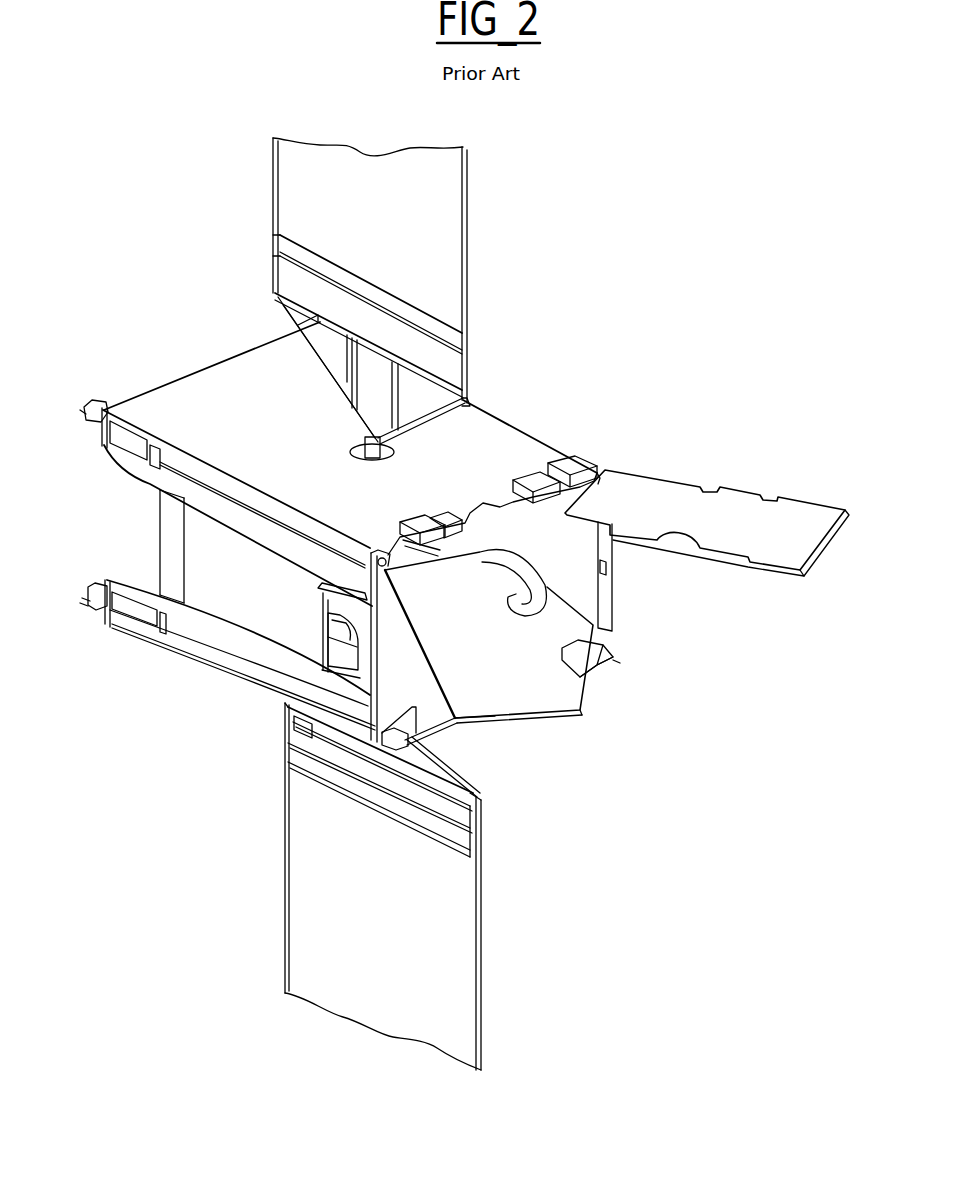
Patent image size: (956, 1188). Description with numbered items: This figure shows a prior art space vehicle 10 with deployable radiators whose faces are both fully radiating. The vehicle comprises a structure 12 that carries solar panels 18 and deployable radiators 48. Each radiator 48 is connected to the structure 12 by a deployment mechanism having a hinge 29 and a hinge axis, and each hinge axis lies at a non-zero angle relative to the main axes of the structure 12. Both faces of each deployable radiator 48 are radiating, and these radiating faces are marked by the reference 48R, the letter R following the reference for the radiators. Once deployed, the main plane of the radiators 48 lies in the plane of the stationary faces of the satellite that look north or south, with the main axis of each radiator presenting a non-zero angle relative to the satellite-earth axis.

The space vehicle 10 is at (567, 350).
The structure 12 is at (512, 422).
The solar panels 18 is at (448, 227).
The hinge 29 is at (593, 463).
The deployable radiators 48 is at (630, 518).
The radiating face 48R is at (732, 510).